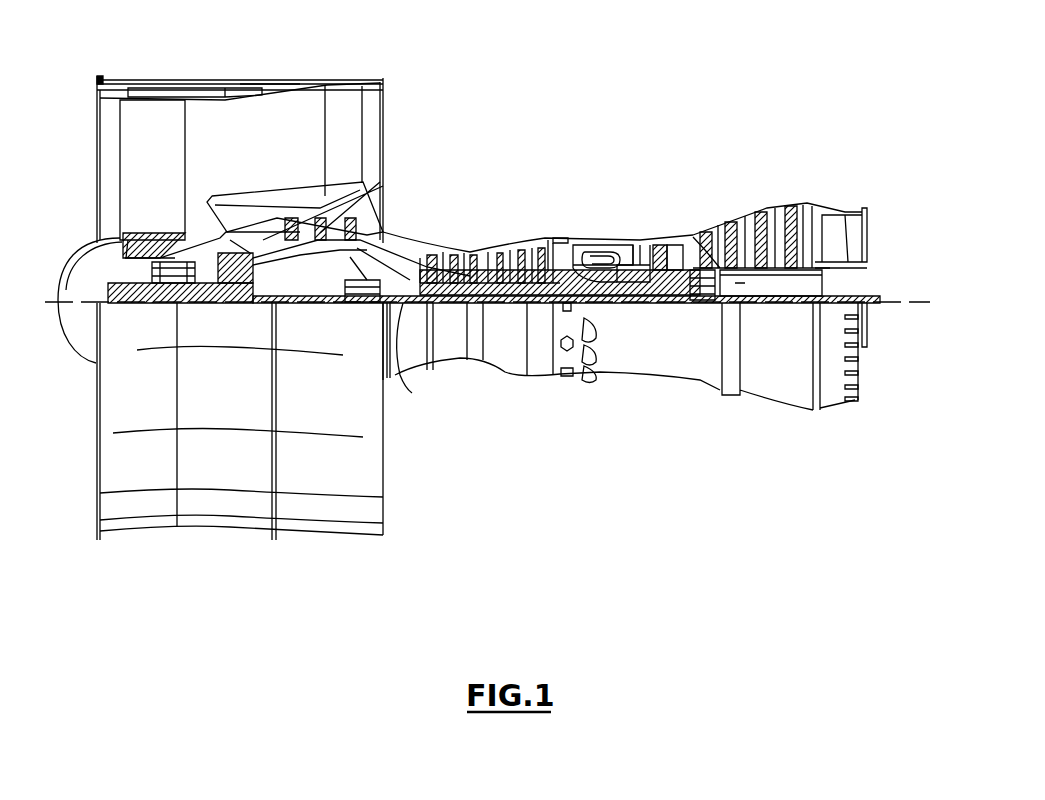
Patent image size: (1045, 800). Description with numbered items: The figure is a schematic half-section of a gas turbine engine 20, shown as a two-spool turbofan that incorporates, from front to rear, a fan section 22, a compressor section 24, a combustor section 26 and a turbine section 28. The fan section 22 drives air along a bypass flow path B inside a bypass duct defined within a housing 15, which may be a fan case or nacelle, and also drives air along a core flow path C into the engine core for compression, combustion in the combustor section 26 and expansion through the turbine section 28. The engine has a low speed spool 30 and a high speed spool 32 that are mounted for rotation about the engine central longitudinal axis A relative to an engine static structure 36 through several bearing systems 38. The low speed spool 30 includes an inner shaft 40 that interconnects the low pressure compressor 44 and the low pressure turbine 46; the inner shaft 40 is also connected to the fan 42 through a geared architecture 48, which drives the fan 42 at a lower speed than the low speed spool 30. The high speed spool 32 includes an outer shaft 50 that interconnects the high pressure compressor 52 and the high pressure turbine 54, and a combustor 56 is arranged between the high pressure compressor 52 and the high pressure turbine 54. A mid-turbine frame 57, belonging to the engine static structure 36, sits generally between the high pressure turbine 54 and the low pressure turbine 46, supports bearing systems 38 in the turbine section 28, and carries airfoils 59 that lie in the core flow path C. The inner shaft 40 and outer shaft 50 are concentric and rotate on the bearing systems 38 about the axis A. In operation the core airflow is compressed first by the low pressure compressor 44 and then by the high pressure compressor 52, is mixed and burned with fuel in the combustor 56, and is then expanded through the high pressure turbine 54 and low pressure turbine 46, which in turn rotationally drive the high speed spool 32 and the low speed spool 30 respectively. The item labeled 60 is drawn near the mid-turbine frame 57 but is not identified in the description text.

The gas turbine engine 20 is at (600, 125).
The fan section 22 is at (183, 74).
The housing 15 is at (240, 83).
The fan 42 is at (162, 183).
The low pressure compressor 44 is at (318, 240).
The compressor section 24 is at (423, 234).
The high pressure compressor 52 is at (492, 252).
The high speed spool 32 is at (541, 251).
The combustor section 26 is at (600, 225).
The combustor 56 is at (600, 262).
The high pressure turbine 54 is at (658, 250).
The mid-turbine frame 57 is at (705, 233).
The vane 60 is at (710, 238).
The turbine section 28 is at (748, 172).
The low pressure turbine 46 is at (763, 210).
The airfoils 59 is at (771, 283).
The geared architecture 48 is at (243, 290).
The bearing systems 38 is at (350, 302).
The inner shaft 40 is at (403, 360).
The low speed spool 30 is at (506, 312).
The engine static structure 36 is at (541, 378).
The outer shaft 50 is at (600, 300).
The engine central longitudinal axis A is at (921, 302).
The bypass flow path B is at (213, 140).
The core flow path C is at (243, 226).